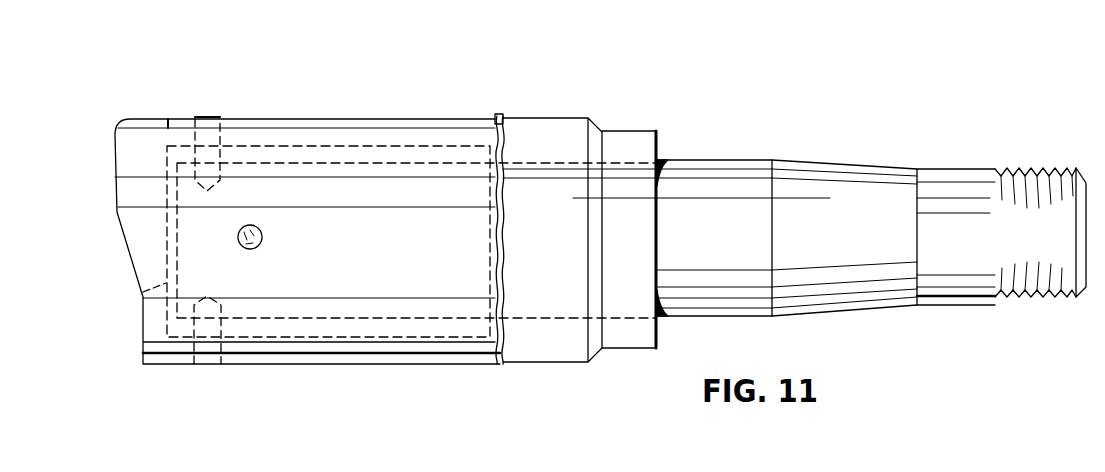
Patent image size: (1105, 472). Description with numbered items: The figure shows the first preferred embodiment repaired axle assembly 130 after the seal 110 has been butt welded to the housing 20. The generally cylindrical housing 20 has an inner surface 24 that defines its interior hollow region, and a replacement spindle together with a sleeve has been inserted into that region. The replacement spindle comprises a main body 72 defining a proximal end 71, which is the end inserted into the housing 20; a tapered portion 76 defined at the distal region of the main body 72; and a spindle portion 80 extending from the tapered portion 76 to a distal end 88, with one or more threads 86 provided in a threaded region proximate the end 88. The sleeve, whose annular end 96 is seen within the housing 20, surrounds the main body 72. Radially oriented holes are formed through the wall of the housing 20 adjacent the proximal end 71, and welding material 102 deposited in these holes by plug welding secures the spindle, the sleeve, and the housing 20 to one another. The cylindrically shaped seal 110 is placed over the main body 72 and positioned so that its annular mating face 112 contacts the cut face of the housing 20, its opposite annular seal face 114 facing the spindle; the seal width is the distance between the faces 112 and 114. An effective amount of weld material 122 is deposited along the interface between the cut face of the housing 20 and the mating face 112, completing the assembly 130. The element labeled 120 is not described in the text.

The repaired axle assembly 130 is at (345, 85).
The housing 20 is at (373, 114).
The annular end 96 is at (182, 105).
The welding material 102 is at (206, 116).
The proximal end 71 is at (137, 293).
The annular mating face 112 is at (490, 232).
The inner surface 24 is at (365, 340).
The weld material 122 is at (506, 121).
The coupler collar 120 is at (505, 362).
The seal 110 is at (627, 128).
The annular seal face 114 is at (664, 182).
The main body 72 is at (752, 162).
The tapered portion 76 is at (838, 172).
The spindle portion 80 is at (965, 298).
The threads 86 is at (1015, 170).
The distal end 88 is at (1093, 172).